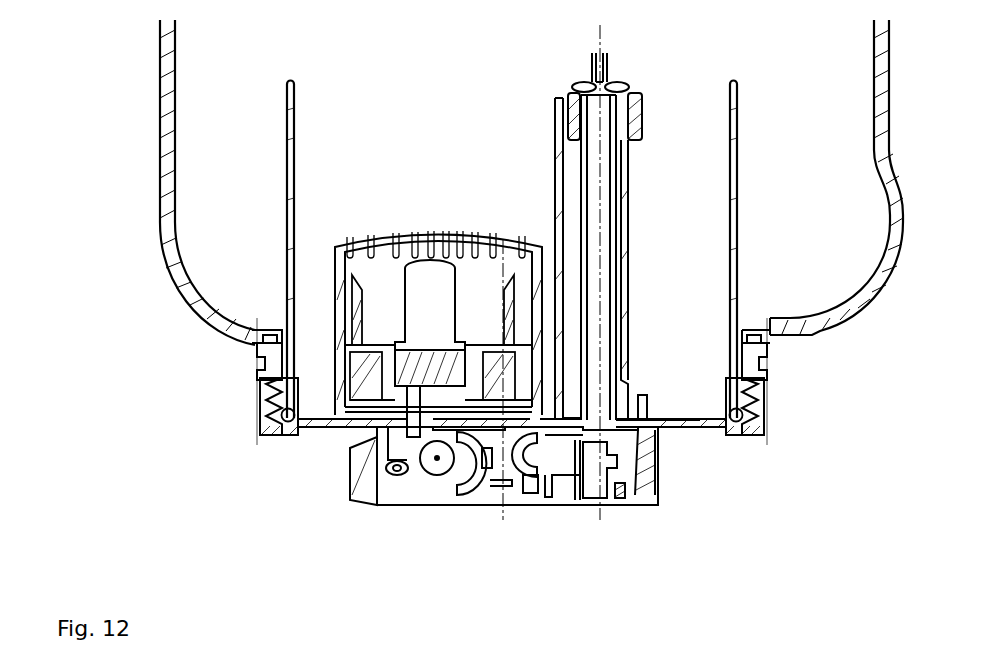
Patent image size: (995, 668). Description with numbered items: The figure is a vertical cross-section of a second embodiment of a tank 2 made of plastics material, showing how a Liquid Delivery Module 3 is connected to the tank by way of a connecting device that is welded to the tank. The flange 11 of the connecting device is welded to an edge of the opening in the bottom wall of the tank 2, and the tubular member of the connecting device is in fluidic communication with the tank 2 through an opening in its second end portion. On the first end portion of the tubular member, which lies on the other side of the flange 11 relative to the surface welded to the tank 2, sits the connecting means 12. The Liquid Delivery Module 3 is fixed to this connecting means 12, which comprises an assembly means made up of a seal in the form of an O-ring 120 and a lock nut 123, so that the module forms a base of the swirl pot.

The tank 2 is at (163, 290).
The flange 11 is at (251, 348).
The connecting means 12 is at (77, 410).
The lock nut 123 is at (262, 396).
The O-ring 120 is at (284, 430).
The Liquid Delivery Module 3 is at (349, 436).